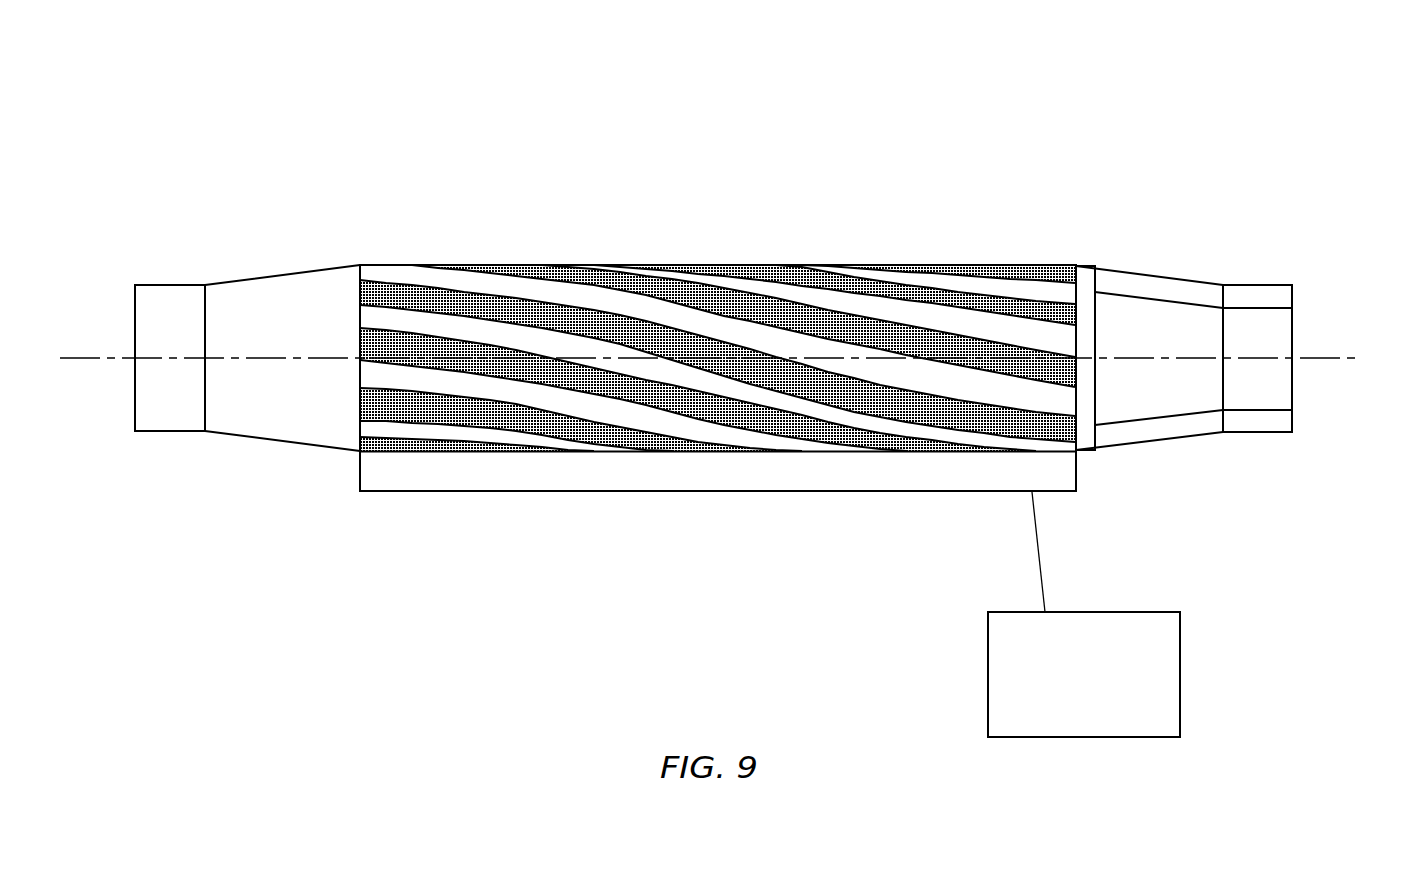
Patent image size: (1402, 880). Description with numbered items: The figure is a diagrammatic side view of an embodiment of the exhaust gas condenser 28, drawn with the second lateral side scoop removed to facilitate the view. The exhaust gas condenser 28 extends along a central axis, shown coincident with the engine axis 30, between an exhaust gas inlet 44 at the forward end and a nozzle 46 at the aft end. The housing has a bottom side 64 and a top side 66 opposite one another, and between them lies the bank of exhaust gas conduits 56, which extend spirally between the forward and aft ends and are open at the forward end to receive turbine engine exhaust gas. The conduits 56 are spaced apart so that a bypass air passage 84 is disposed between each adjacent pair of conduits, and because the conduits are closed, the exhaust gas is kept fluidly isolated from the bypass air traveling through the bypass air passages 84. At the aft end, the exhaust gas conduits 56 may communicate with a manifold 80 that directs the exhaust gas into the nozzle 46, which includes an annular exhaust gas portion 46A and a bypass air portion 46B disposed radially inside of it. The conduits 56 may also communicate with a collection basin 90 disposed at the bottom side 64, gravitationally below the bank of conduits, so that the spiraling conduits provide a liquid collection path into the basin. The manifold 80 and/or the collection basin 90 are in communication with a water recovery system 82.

The exhaust gas condenser 28 is at (888, 104).
The engine axis 30 is at (80, 360).
The exhaust gas inlet 44 is at (190, 460).
The nozzle 46 is at (1314, 326).
The annular exhaust gas portion 46A is at (1257, 300).
The bypass air portion 46B is at (1282, 347).
The exhaust gas conduits 56 is at (385, 318).
The bottom side 64 is at (803, 453).
The top side 66 is at (843, 265).
The manifold 80 is at (1083, 280).
The water recovery system 82 is at (1180, 640).
The bypass air passage 84 is at (627, 288).
The collection basin 90 is at (678, 472).